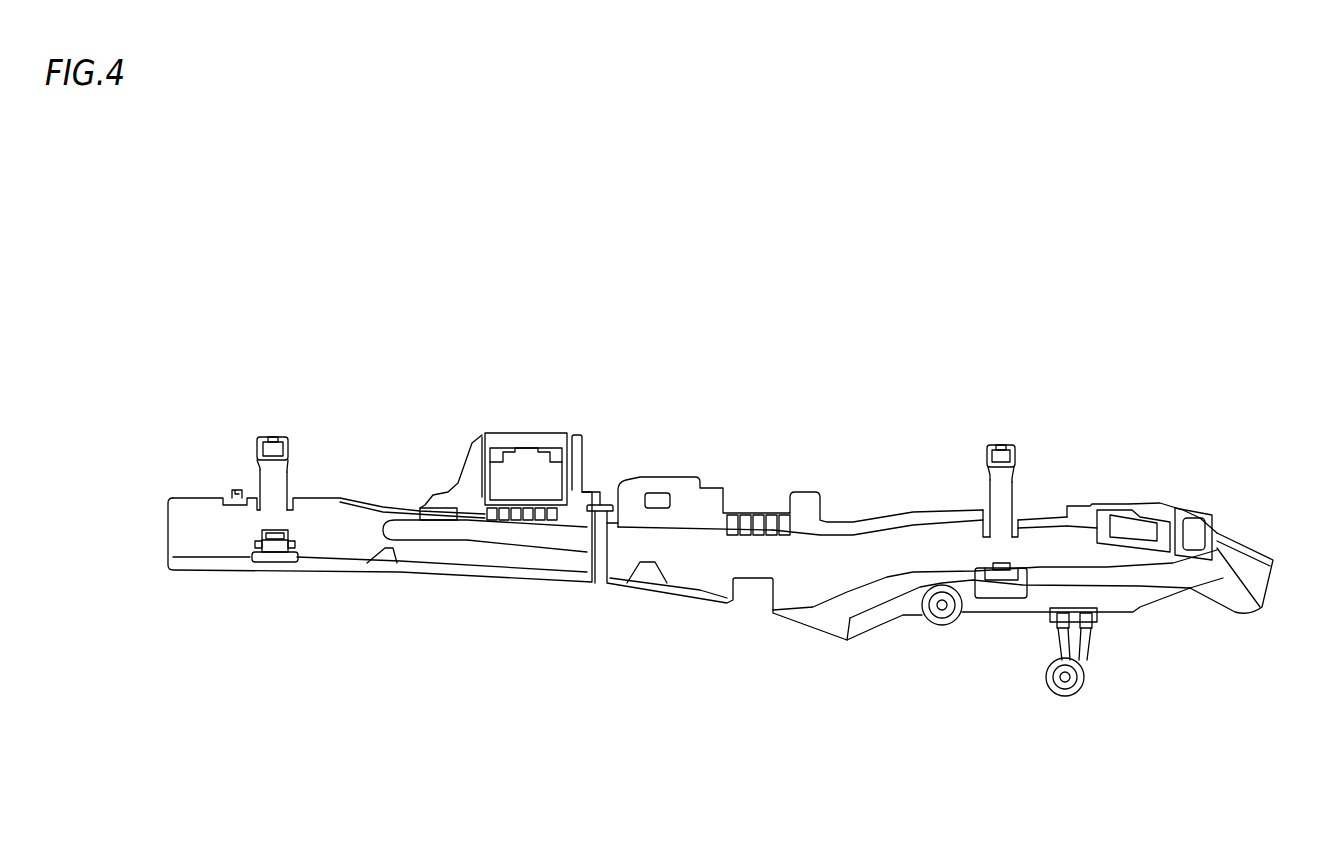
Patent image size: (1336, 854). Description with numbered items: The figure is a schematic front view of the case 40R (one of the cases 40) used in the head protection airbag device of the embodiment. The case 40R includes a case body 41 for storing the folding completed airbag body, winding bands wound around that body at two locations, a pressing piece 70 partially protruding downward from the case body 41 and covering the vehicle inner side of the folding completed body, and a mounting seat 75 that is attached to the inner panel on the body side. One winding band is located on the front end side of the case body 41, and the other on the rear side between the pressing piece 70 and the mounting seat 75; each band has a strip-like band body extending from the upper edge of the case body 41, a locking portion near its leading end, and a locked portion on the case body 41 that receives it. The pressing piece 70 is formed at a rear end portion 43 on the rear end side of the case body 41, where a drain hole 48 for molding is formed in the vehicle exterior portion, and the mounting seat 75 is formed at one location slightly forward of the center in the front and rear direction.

The case 40R is at (1167, 326).
The case 40 is at (730, 473).
The case body 41 is at (467, 582).
The rear end portion 43 is at (1233, 620).
The drain hole 48 is at (1253, 607).
The pressing piece 70 is at (1203, 537).
The mounting seat 75 is at (680, 485).